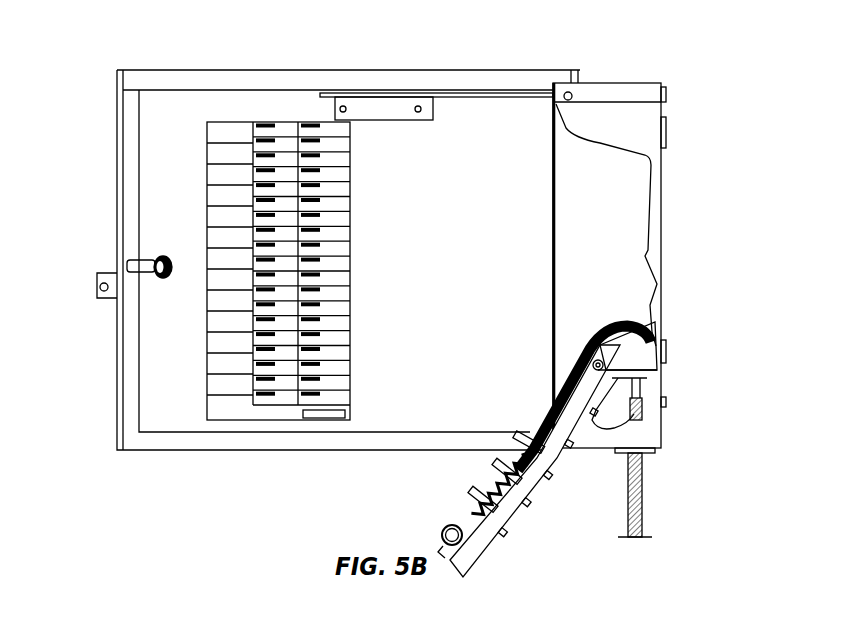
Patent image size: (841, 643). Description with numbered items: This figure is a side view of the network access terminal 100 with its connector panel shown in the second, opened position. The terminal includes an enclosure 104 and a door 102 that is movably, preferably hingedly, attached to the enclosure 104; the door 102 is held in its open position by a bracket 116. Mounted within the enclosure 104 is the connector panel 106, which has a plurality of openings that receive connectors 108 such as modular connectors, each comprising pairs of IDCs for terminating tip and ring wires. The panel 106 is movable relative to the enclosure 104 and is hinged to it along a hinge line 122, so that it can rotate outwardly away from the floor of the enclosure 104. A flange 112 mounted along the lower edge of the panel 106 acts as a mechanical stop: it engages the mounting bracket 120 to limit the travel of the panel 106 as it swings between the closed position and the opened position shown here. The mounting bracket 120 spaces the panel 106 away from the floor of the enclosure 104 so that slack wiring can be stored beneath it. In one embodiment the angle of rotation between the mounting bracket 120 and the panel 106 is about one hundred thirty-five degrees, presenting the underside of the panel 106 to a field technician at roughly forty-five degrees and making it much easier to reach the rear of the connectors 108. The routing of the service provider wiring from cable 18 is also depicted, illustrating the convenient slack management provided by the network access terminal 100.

The network access terminal 100 is at (92, 58).
The door 102 is at (157, 85).
The enclosure 104 is at (655, 253).
The connector panel 106 is at (473, 550).
The connectors 108 is at (532, 502).
The flange 112 is at (642, 392).
The bracket 116 is at (492, 92).
The mounting bracket 120 is at (637, 352).
The hinge line 122 is at (588, 358).
The cable 18 is at (642, 513).